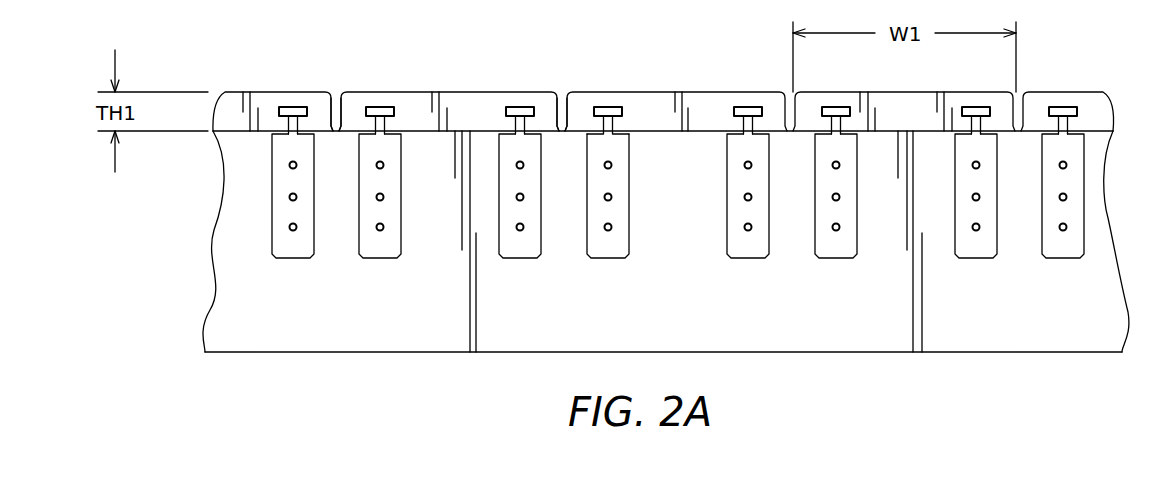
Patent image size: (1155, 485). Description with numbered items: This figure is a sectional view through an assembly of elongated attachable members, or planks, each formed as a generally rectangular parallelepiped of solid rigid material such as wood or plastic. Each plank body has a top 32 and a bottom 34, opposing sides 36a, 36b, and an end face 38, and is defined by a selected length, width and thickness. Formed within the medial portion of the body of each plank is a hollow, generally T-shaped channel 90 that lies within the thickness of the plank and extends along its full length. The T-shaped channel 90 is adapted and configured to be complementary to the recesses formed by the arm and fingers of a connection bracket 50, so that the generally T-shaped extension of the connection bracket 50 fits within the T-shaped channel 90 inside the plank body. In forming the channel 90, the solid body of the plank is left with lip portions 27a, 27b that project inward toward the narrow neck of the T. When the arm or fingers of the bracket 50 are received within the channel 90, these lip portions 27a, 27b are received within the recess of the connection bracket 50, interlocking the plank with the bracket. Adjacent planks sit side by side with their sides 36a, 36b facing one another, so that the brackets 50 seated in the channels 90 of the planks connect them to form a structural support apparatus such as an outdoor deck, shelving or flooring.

The lip portion 27a is at (594, 117).
The lip portion 27b is at (620, 120).
The top 32 is at (723, 92).
The bottom 34 is at (684, 131).
The side 36a is at (337, 112).
The side 36b is at (560, 110).
The end face 38 is at (650, 113).
The connection bracket 50 is at (605, 260).
The T-shaped channel 90 is at (513, 120).